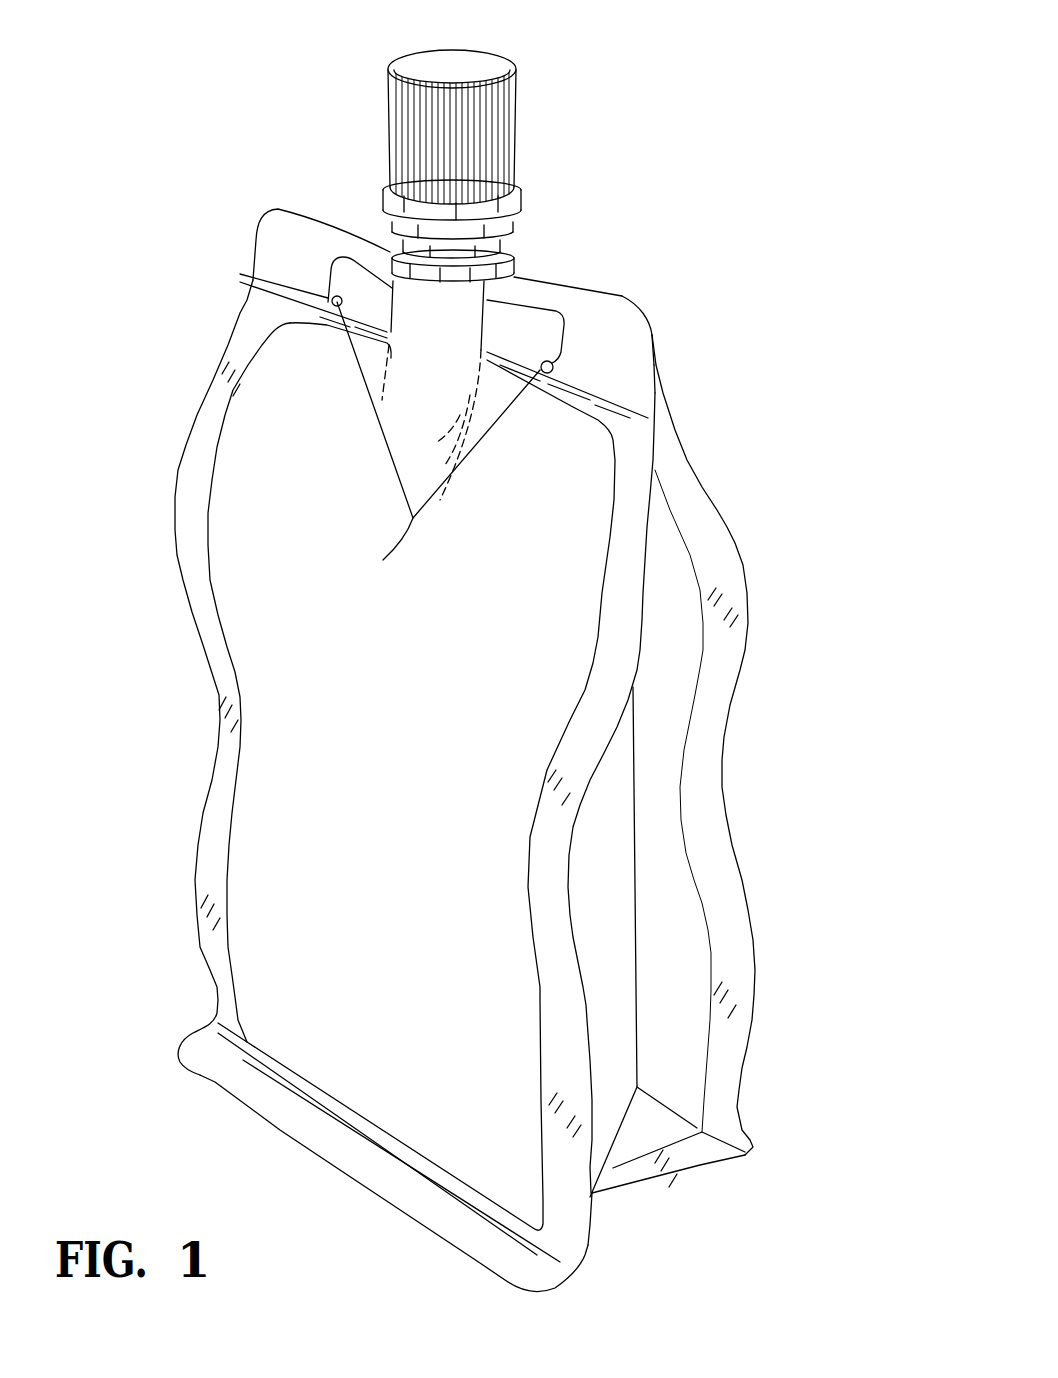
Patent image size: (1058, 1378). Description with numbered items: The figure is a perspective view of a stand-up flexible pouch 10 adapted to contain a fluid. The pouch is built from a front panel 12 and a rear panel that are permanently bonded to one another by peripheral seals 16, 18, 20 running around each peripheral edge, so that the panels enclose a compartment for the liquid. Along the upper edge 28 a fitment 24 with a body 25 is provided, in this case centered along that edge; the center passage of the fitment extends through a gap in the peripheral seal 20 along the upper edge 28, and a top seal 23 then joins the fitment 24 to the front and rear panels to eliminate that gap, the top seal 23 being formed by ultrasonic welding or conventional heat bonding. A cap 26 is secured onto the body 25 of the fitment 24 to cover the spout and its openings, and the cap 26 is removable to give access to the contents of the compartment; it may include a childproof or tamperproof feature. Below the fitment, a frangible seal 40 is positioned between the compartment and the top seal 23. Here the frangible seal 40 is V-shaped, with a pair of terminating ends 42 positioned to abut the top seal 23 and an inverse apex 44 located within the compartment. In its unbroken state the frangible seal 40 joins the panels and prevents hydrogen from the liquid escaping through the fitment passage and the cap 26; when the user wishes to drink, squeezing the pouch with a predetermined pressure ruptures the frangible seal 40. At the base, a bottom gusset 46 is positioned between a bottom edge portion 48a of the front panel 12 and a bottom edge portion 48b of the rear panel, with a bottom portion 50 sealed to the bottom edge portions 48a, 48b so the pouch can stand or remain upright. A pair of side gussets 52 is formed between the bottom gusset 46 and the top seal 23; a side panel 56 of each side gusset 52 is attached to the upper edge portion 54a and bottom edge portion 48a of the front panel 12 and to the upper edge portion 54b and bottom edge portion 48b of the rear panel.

The flexible pouch 10 is at (785, 103).
The front panel 12 is at (587, 547).
The peripheral seal 16 is at (190, 525).
The peripheral seal 18 is at (627, 643).
The peripheral seal 20 is at (637, 300).
The top seal 23 is at (527, 343).
The fitment 24 is at (600, 75).
The body 25 is at (553, 207).
The cap 26 is at (512, 60).
The upper edge 28 is at (582, 280).
The frangible seal 40 is at (360, 418).
The terminating ends 42 is at (335, 300).
The inverse apex 44 is at (407, 527).
The bottom gusset 46 is at (670, 1203).
The bottom edge portion of the front panel 48a is at (477, 1247).
The bottom edge portion of the rear panel 48b is at (752, 1137).
The bottom portion 50 is at (617, 1230).
The side gussets 52 is at (800, 872).
The upper edge portion of the front panel 54a is at (653, 332).
The upper edge portion of the rear panel 54b is at (660, 363).
The side panel 56 is at (637, 1030).